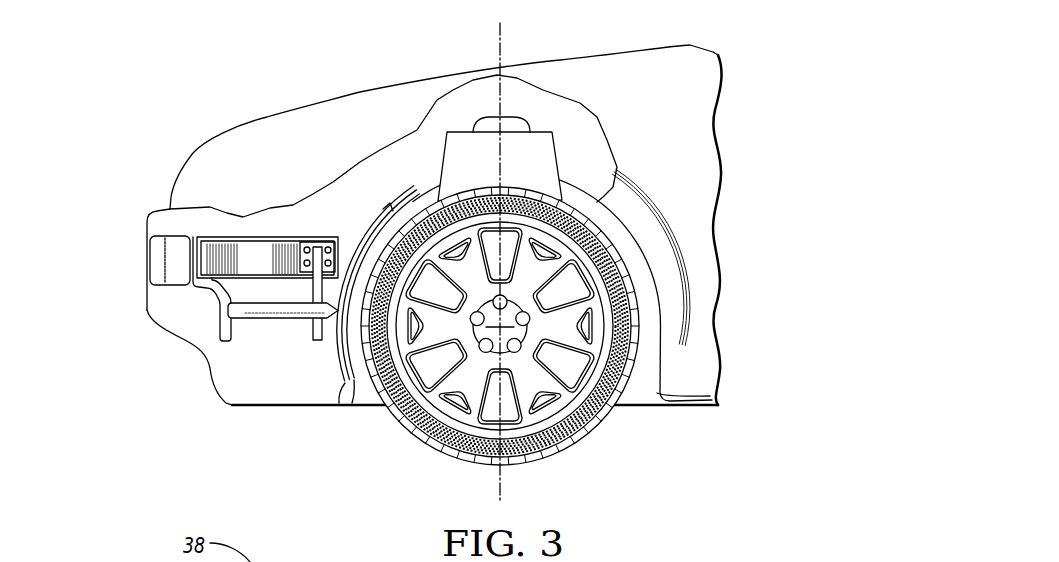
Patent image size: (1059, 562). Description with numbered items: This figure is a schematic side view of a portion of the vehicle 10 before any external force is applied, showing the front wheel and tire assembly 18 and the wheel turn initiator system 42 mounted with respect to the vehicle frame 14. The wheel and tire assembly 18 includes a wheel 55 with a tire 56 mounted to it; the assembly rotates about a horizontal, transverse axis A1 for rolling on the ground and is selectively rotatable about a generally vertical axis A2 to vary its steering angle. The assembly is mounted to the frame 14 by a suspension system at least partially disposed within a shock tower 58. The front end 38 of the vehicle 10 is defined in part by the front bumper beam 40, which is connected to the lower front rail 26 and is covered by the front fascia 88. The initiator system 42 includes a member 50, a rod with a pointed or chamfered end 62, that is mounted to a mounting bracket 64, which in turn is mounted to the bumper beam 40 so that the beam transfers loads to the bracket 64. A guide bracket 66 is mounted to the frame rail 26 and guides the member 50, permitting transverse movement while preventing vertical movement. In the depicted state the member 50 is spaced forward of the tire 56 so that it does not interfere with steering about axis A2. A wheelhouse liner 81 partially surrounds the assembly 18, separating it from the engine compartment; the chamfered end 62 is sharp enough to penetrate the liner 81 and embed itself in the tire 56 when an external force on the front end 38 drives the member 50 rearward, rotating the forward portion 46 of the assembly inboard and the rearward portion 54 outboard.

The vehicle 10 is at (262, 46).
The vehicle frame 14 is at (248, 253).
The front wheel and tire assembly 18 is at (533, 448).
The front rail 26 is at (263, 250).
The front end 38 is at (147, 265).
The front bumper beam 40 is at (177, 258).
The wheel turn initiator system 42 is at (256, 345).
The forward portion 46 is at (376, 368).
The member 50 is at (267, 323).
The rearward portion 54 is at (630, 330).
The wheel 55 is at (468, 378).
The tire 56 is at (593, 412).
The shock tower 58 is at (533, 160).
The chamfered end 62 is at (370, 247).
The mounting bracket 64 is at (220, 323).
The guide bracket 66 is at (318, 342).
The wheelhouse liner 81 is at (413, 228).
The front fascia 88 is at (150, 308).
The horizontal transverse axis A1 is at (502, 328).
The vertical axis A2 is at (502, 47).